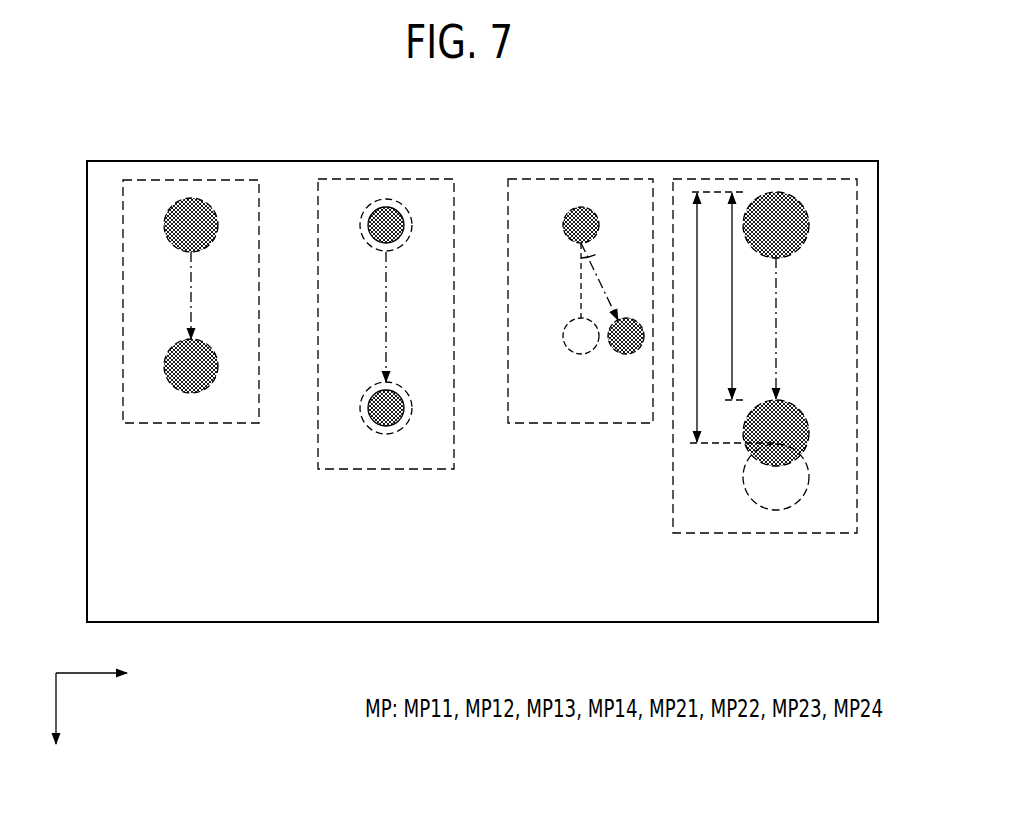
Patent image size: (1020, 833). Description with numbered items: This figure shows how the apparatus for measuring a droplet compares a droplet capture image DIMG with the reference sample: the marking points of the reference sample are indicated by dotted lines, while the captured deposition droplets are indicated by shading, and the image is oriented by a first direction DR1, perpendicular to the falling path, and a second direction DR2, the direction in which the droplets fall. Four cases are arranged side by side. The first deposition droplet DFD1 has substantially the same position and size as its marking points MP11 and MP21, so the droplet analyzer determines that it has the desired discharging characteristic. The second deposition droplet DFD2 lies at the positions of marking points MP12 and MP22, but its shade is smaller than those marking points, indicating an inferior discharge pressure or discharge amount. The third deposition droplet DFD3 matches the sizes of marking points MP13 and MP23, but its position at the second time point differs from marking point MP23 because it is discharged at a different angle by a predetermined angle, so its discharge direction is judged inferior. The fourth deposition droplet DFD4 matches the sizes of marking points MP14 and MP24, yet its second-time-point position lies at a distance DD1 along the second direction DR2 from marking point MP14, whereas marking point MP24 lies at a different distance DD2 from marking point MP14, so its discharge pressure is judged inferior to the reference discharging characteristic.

The droplet capture image DIMG is at (713, 161).
The first deposition droplet DFD1 is at (150, 424).
The second deposition droplet DFD2 is at (345, 470).
The third deposition droplet DFD3 is at (583, 424).
The fourth deposition droplet DFD4 is at (700, 534).
The marking point MP11 is at (212, 250).
The marking point MP12 is at (407, 249).
The marking point MP13 is at (568, 242).
The marking point MP14 is at (803, 251).
The marking point MP21 is at (211, 391).
The marking point MP22 is at (409, 433).
The marking point MP23 is at (567, 350).
The marking point MP24 is at (805, 499).
The distance DD1 is at (721, 296).
The distance DD2 is at (728, 318).
The first direction DR1 is at (110, 675).
The second direction DR2 is at (56, 724).